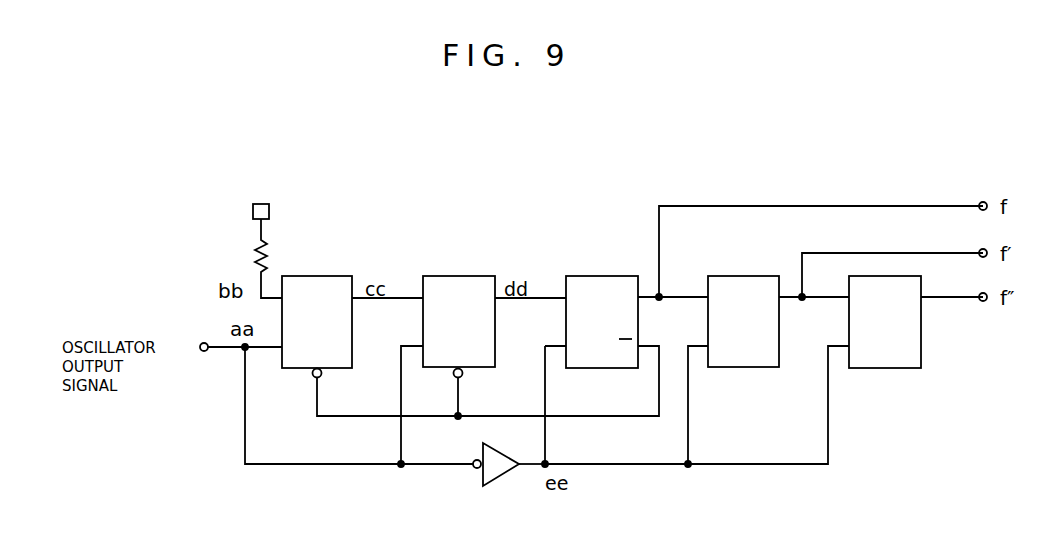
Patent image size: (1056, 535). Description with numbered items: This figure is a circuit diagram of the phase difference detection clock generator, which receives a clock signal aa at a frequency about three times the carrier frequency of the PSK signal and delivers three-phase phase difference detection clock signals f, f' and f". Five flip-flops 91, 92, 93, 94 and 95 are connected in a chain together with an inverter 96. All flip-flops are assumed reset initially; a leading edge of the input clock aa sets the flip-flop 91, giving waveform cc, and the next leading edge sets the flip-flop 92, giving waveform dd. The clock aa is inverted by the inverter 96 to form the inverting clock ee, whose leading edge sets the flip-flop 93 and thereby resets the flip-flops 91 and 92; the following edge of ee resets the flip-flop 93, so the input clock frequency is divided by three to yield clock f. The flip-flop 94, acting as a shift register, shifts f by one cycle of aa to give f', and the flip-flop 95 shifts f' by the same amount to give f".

The flip-flop 91 is at (313, 276).
The flip-flop 92 is at (460, 276).
The flip-flop 93 is at (601, 276).
The flip-flop 94 is at (742, 276).
The flip-flop 95 is at (882, 368).
The inverter 96 is at (503, 478).